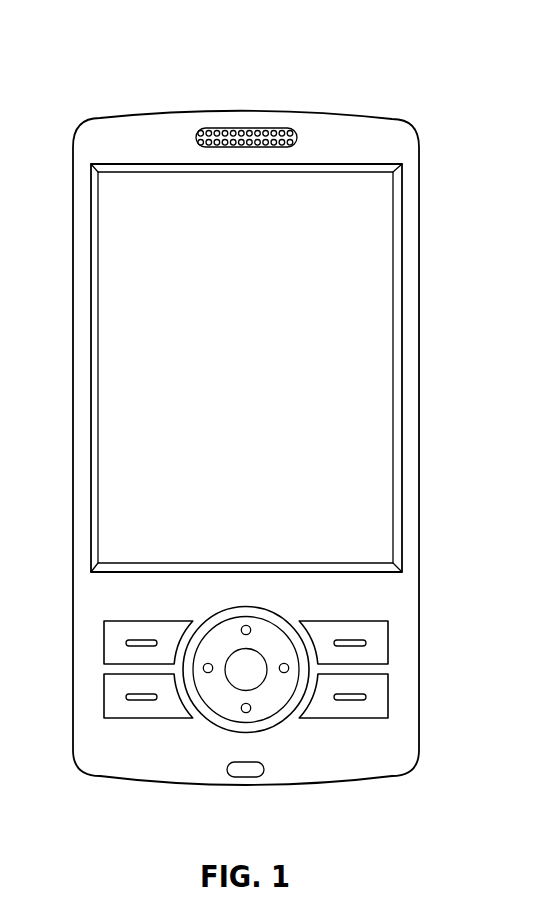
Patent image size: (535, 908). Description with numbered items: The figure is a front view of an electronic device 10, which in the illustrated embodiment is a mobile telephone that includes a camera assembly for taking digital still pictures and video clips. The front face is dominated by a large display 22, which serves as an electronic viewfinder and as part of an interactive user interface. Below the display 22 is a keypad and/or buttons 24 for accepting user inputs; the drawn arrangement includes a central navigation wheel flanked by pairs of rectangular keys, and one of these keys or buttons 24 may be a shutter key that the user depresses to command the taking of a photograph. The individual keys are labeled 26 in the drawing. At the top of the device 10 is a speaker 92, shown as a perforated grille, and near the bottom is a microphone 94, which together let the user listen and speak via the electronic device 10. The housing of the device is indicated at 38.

The electronic device 10 is at (259, 447).
The display 22 is at (382, 223).
The keypad and/or buttons 24 is at (283, 725).
The electronic controller 26 is at (402, 668).
The housing 38 is at (348, 765).
The speaker 92 is at (247, 128).
The microphone 94 is at (250, 771).